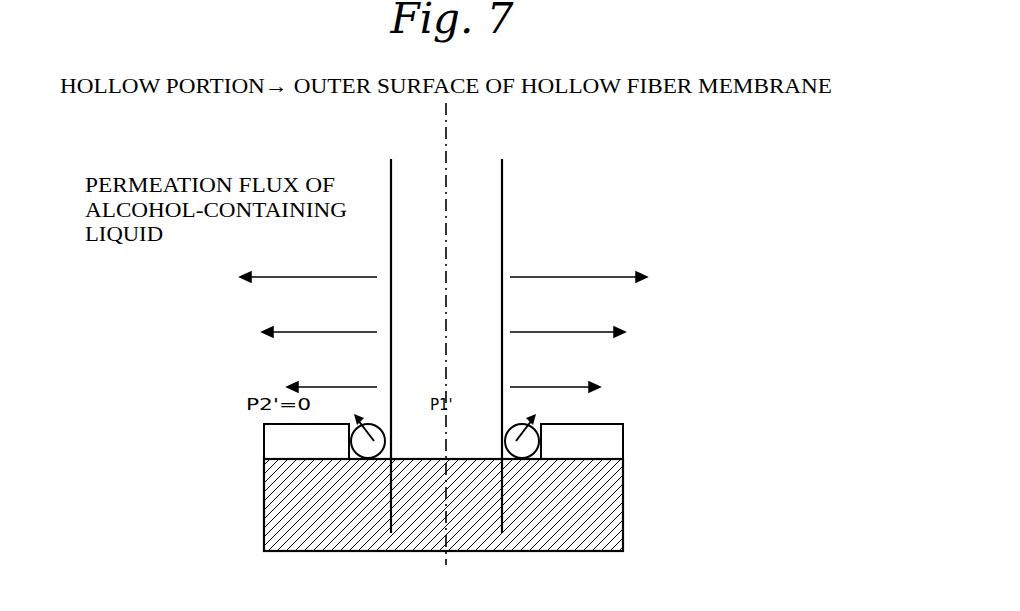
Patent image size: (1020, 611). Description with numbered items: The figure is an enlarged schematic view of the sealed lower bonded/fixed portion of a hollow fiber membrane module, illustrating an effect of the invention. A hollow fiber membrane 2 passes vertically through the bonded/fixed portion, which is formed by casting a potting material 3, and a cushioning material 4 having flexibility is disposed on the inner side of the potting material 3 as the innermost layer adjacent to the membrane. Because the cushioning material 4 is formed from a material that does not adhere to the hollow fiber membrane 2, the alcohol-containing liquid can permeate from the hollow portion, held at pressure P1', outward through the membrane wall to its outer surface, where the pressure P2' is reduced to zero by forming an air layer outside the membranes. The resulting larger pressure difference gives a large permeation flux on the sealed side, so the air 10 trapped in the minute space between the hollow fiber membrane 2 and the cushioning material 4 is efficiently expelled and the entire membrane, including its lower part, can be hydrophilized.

The hollow fiber membrane 2 is at (502, 176).
The potting material 3 is at (620, 515).
The cushioning material 4 is at (620, 433).
The air 10 is at (540, 443).